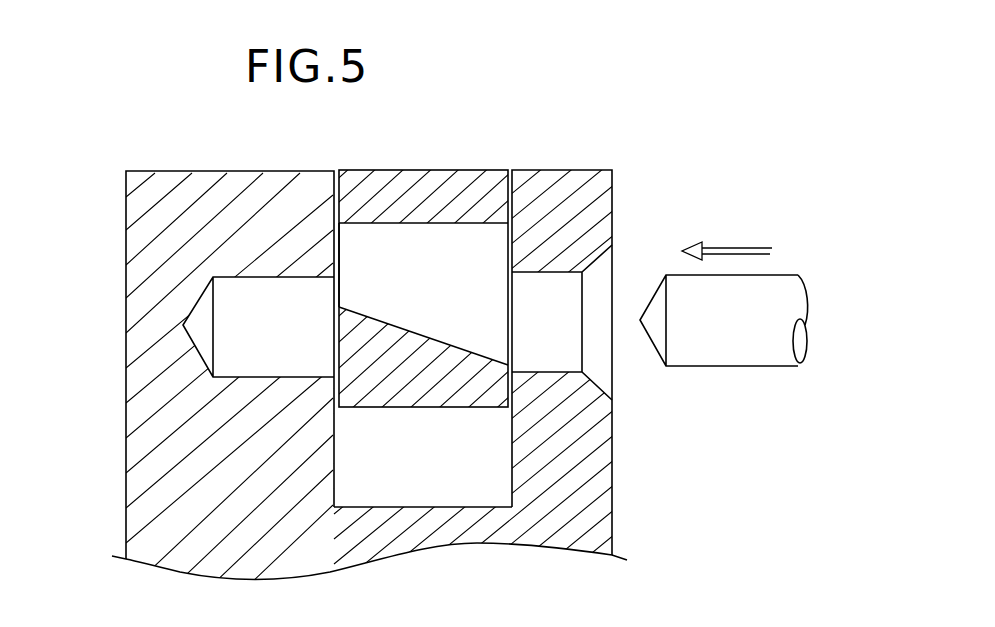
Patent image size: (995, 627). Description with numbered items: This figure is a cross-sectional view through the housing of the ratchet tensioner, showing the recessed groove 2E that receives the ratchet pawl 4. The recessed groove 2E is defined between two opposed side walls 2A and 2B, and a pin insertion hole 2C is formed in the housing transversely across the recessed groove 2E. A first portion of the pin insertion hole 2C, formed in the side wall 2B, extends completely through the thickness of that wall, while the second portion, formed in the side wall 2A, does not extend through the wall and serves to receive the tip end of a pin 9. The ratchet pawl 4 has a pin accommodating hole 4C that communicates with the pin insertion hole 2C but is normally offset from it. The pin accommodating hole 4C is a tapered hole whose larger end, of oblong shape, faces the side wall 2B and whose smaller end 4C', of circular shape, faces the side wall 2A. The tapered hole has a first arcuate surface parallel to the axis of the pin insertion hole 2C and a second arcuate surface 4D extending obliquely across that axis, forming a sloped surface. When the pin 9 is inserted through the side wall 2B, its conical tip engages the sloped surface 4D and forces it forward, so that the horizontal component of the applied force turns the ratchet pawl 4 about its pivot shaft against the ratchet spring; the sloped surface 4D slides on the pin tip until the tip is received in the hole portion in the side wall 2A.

The side wall 2A is at (241, 213).
The side wall 2B is at (561, 197).
The pin insertion hole 2C is at (230, 315).
The recessed groove 2E is at (420, 485).
The ratchet pawl 4 is at (425, 286).
The pin accommodating hole 4C is at (425, 200).
The smaller end 4C' is at (369, 215).
The second arcuate surface 4D is at (437, 332).
The pin 9 is at (740, 353).